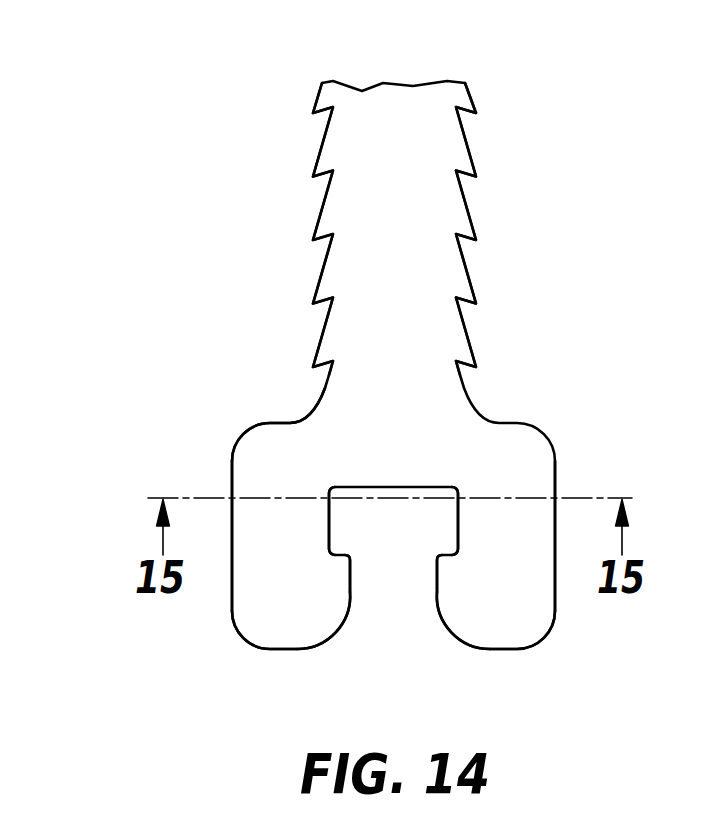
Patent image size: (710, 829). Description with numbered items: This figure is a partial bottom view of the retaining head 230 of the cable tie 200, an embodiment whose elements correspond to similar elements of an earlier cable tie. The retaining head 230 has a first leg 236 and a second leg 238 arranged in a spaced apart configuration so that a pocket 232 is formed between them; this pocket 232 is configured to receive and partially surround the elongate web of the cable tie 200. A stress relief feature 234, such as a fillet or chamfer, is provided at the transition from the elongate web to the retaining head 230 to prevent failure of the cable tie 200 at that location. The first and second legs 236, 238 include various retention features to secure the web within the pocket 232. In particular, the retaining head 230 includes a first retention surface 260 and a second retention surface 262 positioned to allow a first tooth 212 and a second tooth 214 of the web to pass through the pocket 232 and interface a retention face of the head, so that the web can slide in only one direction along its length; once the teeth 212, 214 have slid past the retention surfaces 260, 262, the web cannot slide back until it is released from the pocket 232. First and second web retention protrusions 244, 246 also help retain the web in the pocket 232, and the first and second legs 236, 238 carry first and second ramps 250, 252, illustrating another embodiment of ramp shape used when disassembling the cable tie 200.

The cable tie 200 is at (178, 164).
The first tooth 212 is at (468, 212).
The second tooth 214 is at (323, 202).
The retaining head 230 is at (232, 473).
The pocket 232 is at (390, 618).
The stress relief feature 234 is at (302, 413).
The first leg 236 is at (280, 651).
The second leg 238 is at (508, 649).
The first web retention protrusion 244 is at (318, 623).
The second web retention protrusion 246 is at (472, 619).
The first ramp 250 is at (392, 553).
The second ramp 252 is at (422, 591).
The first retention surface 260 is at (330, 535).
The second retention surface 262 is at (458, 532).